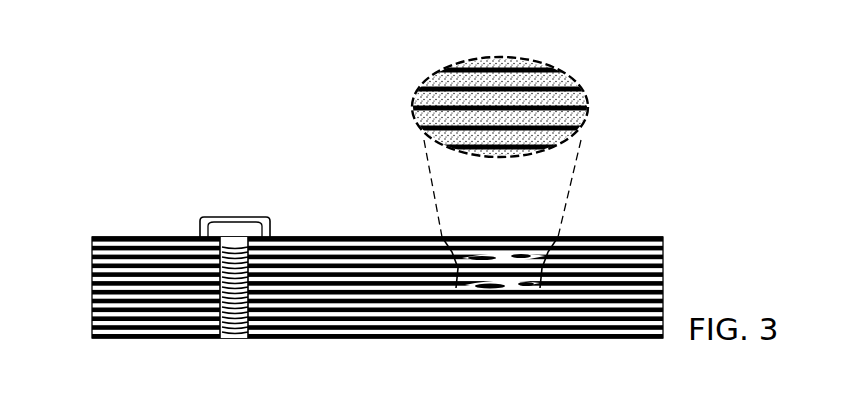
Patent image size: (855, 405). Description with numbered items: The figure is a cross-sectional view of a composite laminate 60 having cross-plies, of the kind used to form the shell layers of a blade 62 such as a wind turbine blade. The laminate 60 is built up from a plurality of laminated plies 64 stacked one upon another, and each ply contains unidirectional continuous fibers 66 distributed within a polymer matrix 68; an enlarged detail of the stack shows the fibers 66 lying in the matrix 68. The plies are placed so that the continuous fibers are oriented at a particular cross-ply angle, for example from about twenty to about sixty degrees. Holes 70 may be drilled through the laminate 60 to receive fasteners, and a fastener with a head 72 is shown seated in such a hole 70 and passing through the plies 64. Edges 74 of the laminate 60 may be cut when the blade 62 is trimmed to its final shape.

The composite laminate 60 is at (403, 279).
The blade 62 is at (190, 268).
The laminated plies 64 is at (163, 337).
The unidirectional continuous fibers 66 is at (520, 60).
The polymer matrix 68 is at (433, 78).
The holes 70 is at (262, 337).
The fastener head 72 is at (236, 217).
The edges 74 is at (665, 270).